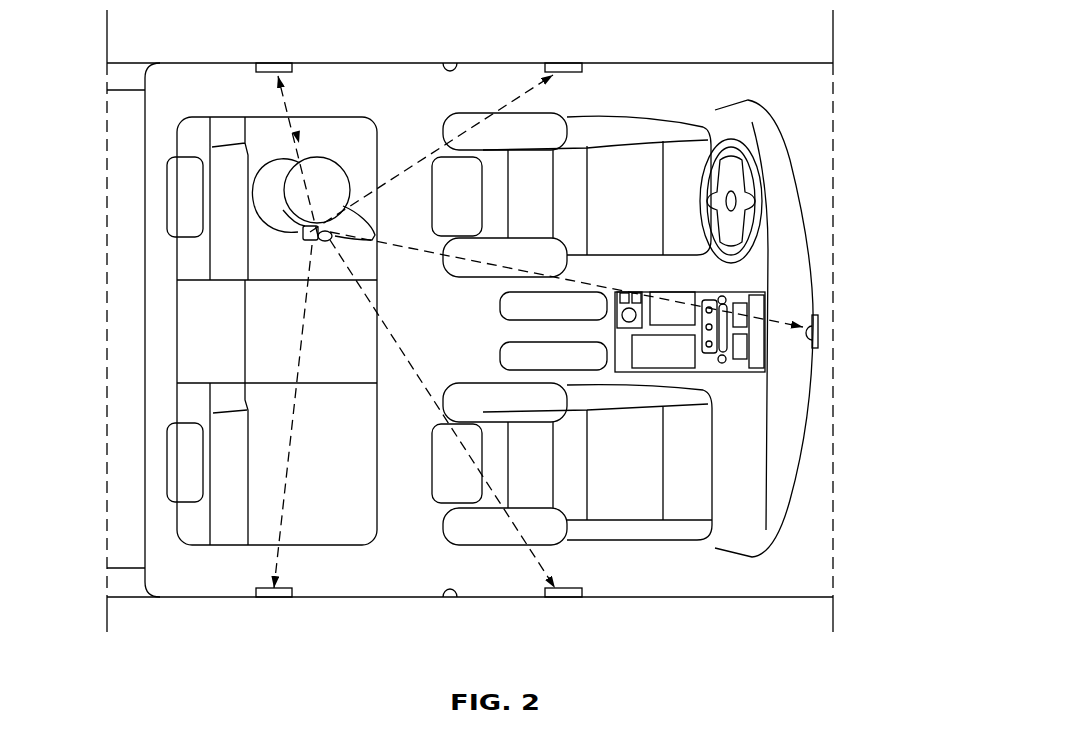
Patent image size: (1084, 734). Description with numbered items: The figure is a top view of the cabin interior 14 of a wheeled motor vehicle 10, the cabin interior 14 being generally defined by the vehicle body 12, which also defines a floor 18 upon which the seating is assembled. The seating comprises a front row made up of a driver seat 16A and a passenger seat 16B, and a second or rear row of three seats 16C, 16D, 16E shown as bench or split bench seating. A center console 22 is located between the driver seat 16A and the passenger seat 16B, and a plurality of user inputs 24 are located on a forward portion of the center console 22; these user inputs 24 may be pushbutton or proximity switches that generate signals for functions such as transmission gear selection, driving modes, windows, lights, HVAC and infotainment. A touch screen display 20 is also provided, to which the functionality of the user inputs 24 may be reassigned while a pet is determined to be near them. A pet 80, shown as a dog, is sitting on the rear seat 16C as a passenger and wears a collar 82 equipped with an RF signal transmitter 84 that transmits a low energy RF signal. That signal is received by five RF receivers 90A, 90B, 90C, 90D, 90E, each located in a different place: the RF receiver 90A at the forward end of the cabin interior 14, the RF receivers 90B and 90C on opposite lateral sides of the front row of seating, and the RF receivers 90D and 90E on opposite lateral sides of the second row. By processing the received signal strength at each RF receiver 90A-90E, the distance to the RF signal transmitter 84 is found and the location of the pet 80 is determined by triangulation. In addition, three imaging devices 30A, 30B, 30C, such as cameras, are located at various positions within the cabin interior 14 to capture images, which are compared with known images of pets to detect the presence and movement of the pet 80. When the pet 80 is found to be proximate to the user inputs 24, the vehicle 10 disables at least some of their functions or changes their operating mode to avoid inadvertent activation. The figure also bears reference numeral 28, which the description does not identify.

The vehicle 10 is at (845, 52).
The vehicle body 12 is at (732, 598).
The cabin interior 14 is at (397, 547).
The driver seat 16A is at (627, 170).
The passenger seat 16B is at (620, 493).
The rear seat 16C is at (192, 137).
The rear seat 16D is at (197, 343).
The rear seat 16E is at (192, 523).
The floor 18 is at (410, 133).
The touch screen display 20 is at (757, 345).
The center console 22 is at (695, 280).
The user inputs 24 is at (620, 293).
The storage compartments 28 is at (563, 353).
The imaging device 30A is at (806, 330).
The imaging device 30B is at (447, 72).
The imaging device 30C is at (440, 588).
The pet 80 is at (300, 133).
The collar 82 is at (287, 230).
The RF signal transmitter 84 is at (300, 246).
The RF receiver 90A is at (820, 333).
The RF receiver 90B is at (567, 63).
The RF receiver 90C is at (560, 600).
The RF receiver 90D is at (275, 62).
The RF receiver 90E is at (272, 600).